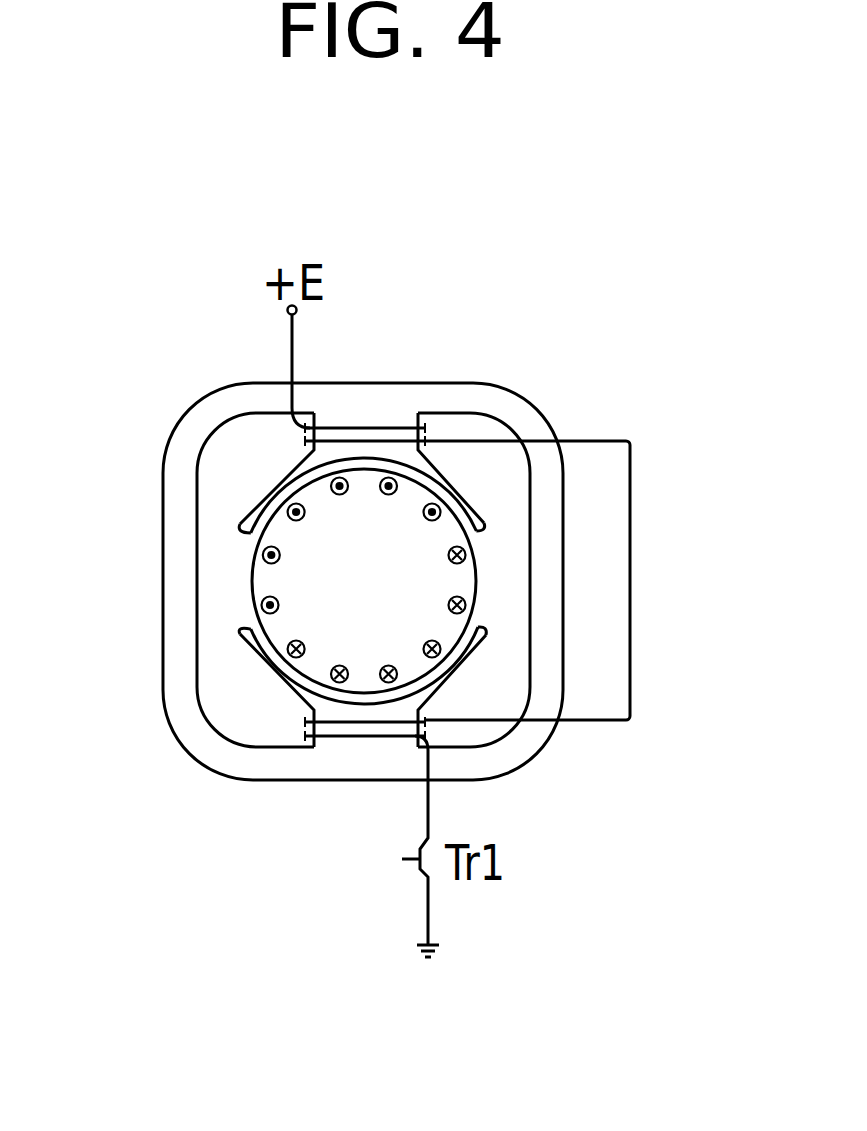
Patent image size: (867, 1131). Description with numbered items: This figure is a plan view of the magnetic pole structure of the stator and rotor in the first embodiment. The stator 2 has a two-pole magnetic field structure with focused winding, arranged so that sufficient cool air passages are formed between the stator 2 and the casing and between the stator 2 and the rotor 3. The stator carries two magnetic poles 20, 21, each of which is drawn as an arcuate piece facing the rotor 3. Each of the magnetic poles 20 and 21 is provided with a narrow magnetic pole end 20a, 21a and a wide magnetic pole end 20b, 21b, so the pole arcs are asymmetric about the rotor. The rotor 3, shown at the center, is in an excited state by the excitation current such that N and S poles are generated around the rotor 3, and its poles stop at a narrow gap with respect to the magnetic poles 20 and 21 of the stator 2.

The stator 2 is at (163, 582).
The rotor 3 is at (478, 583).
The magnetic pole 20 is at (360, 450).
The narrow magnetic pole end 20a is at (481, 516).
The wide magnetic pole end 20b is at (238, 523).
The magnetic pole 21 is at (362, 712).
The narrow magnetic pole end 21a is at (246, 633).
The wide magnetic pole end 21b is at (489, 636).